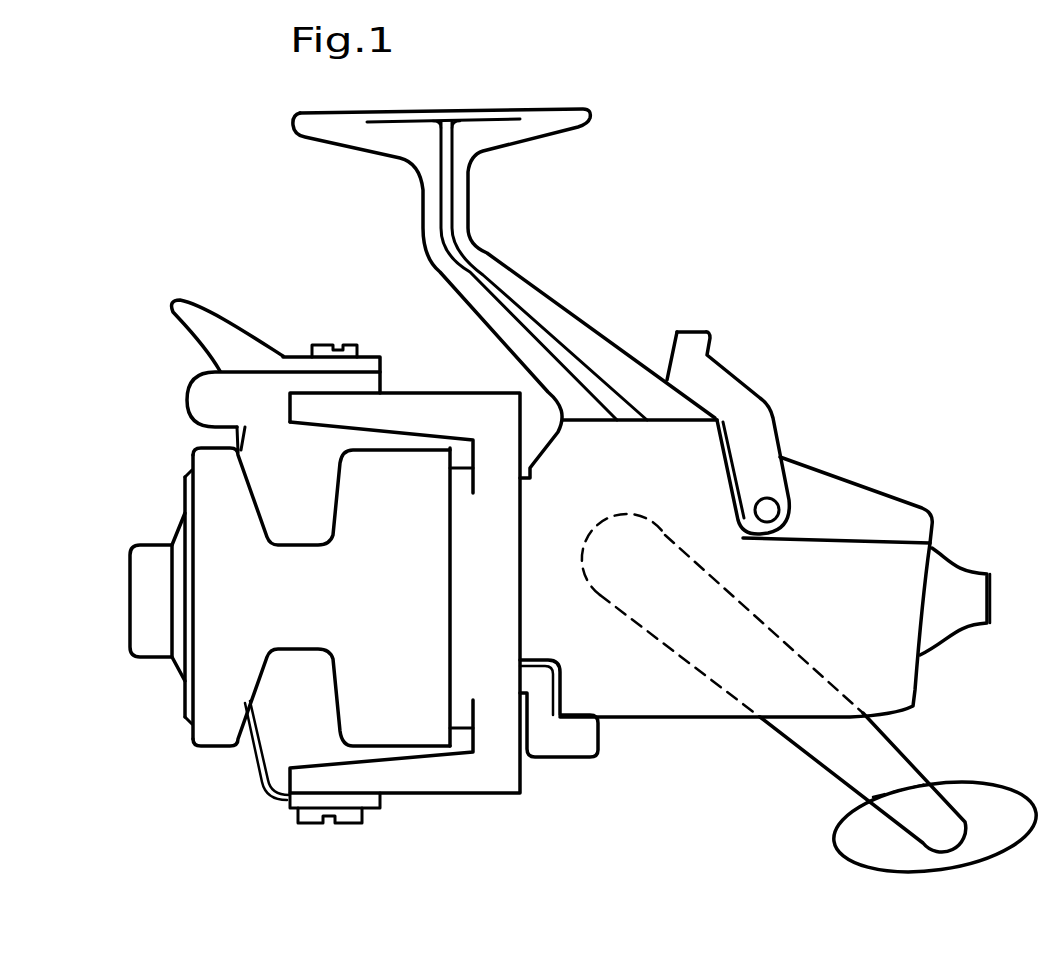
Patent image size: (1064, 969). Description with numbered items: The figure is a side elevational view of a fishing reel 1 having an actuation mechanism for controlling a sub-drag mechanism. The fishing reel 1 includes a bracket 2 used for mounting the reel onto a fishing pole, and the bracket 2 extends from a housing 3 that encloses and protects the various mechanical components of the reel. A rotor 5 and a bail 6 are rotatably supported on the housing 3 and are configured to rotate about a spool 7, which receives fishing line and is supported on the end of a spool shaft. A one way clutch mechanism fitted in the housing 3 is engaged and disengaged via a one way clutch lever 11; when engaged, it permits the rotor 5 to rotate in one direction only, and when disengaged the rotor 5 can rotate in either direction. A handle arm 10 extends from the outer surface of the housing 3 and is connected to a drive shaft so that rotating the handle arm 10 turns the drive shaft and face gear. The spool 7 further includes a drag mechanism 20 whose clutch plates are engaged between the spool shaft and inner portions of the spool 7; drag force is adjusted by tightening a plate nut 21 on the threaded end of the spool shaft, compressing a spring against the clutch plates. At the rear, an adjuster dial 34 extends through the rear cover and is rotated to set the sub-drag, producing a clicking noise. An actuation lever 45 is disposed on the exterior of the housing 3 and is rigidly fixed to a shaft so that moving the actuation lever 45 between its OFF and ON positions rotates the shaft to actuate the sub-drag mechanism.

The fishing reel 1 is at (557, 269).
The bracket 2 is at (510, 133).
The housing 3 is at (657, 697).
The rotor 5 is at (447, 780).
The bail 6 is at (270, 800).
The spool 7 is at (223, 693).
The handle arm 10 is at (870, 753).
The one way clutch lever 11 is at (580, 747).
The drag mechanism 20 is at (160, 539).
The plate nut 21 is at (147, 597).
The adjuster dial 34 is at (970, 598).
The actuation lever 45 is at (727, 392).